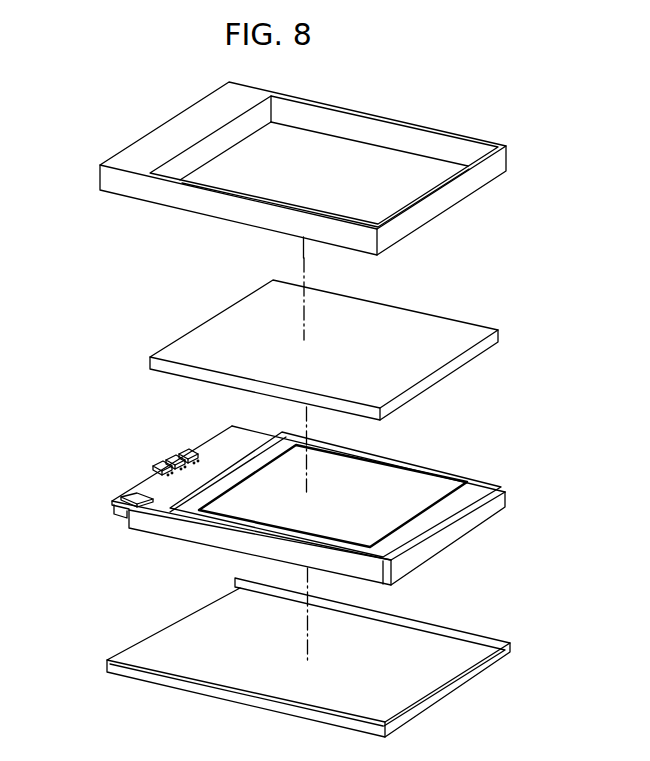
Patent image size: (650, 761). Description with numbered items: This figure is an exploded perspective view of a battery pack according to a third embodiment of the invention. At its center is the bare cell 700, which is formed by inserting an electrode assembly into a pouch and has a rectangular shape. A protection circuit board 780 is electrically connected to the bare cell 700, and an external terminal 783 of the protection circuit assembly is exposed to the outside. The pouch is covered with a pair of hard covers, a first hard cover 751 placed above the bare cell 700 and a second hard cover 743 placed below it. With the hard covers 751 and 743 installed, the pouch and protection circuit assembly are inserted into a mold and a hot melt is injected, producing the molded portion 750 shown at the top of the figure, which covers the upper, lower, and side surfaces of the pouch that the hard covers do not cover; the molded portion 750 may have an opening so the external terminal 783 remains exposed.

The bare cell 700 is at (480, 488).
The second hard cover 743 is at (138, 651).
The molded portion 750 is at (141, 151).
The first hard cover 751 is at (183, 346).
The protection circuit board 780 is at (150, 490).
The external terminal 783 is at (168, 455).